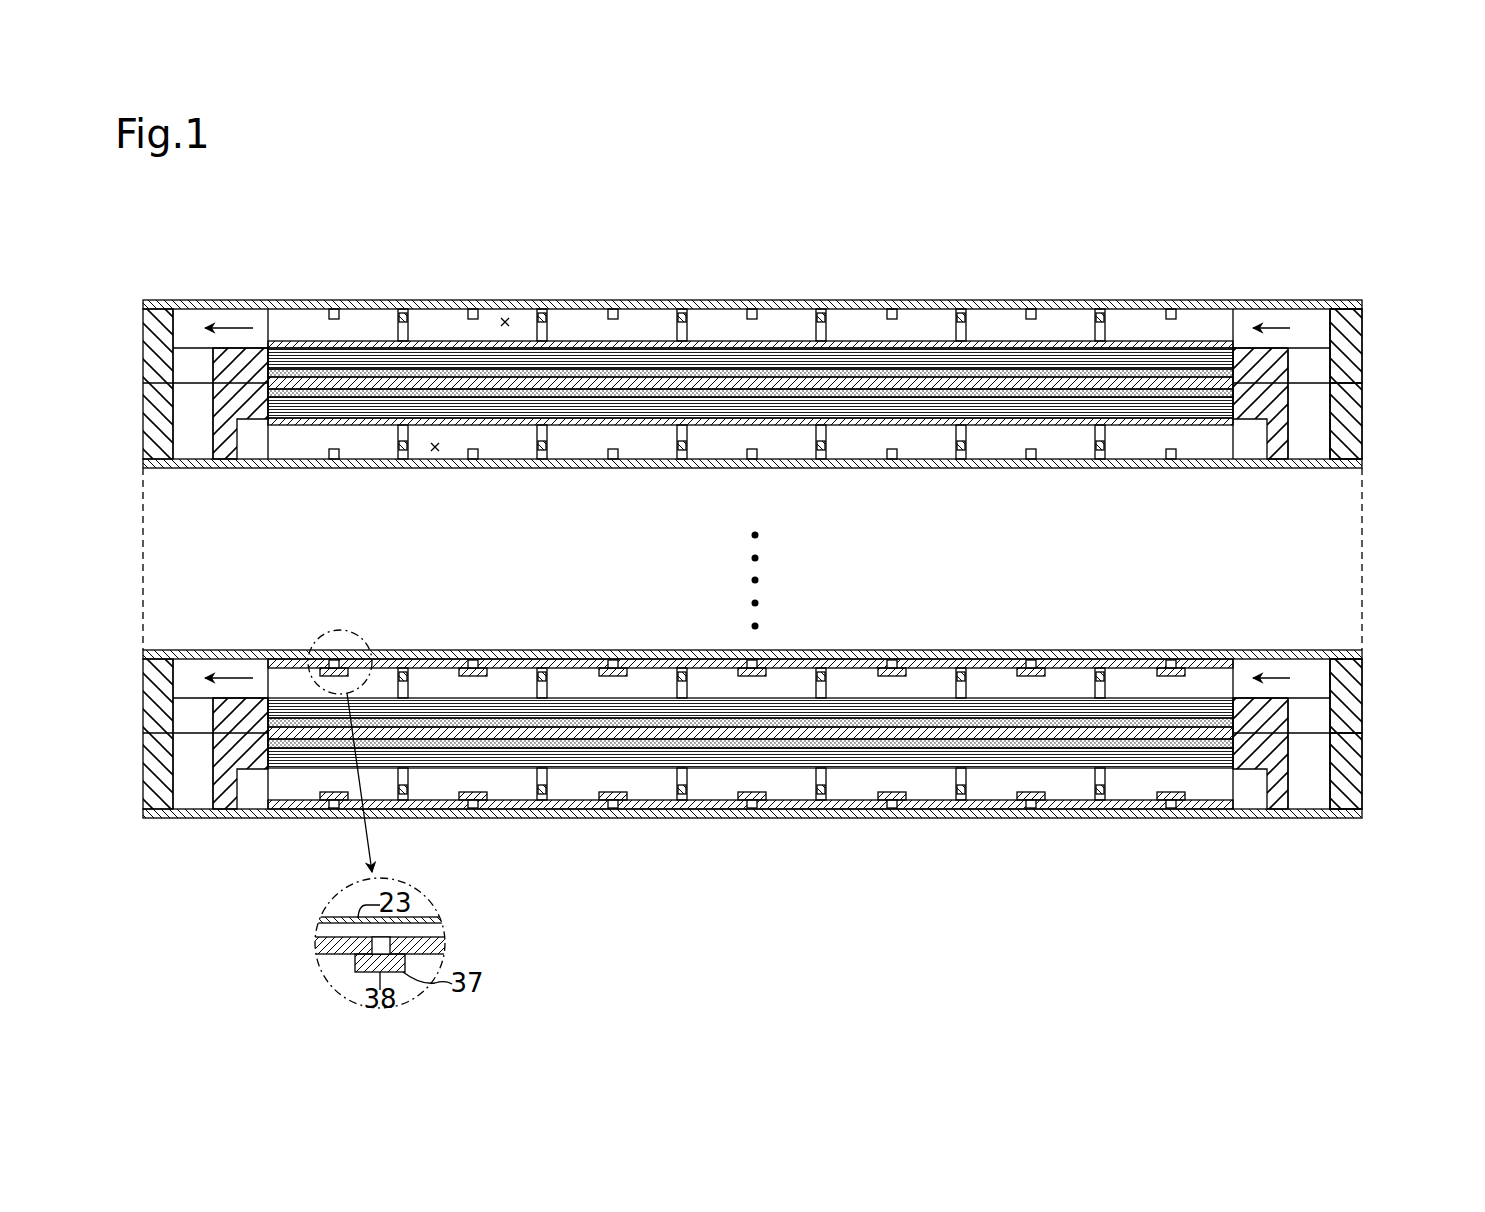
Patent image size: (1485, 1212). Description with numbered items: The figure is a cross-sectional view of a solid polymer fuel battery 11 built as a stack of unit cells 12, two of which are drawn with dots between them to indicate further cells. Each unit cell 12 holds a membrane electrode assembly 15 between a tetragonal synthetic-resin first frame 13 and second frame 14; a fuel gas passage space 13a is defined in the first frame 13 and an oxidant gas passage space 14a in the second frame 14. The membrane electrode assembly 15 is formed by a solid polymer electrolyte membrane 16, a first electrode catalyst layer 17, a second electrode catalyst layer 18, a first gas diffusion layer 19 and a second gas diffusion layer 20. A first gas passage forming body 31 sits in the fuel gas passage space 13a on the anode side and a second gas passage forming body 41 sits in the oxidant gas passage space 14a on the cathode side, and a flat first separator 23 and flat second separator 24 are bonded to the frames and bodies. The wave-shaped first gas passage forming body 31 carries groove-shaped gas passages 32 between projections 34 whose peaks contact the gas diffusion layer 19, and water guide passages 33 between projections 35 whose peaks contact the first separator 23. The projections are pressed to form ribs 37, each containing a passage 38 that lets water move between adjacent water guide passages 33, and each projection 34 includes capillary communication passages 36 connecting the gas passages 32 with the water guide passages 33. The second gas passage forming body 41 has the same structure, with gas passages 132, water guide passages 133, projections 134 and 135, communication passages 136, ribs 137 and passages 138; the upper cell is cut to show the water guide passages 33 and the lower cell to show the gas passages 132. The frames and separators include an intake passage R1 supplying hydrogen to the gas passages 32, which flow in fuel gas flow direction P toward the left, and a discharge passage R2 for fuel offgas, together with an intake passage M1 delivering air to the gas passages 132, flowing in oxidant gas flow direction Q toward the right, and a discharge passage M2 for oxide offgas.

The fuel battery 11 is at (1369, 218).
The unit cell 12 is at (1392, 300).
The first frame 13 is at (1363, 363).
The second frame 14 is at (1363, 428).
The membrane electrode assembly 15 is at (858, 264).
The solid polymer electrolyte membrane 16 is at (975, 383).
The first electrode catalyst layer 17 is at (1010, 393).
The second electrode catalyst layer 18 is at (930, 350).
The first gas diffusion layer 19 is at (1050, 372).
The second gas diffusion layer 20 is at (876, 410).
The first separator 23 is at (806, 341).
The second separator 24 is at (820, 425).
The first gas passage forming body 31 is at (1130, 333).
The gas passage 32 is at (505, 683).
The water guide passage 33 is at (505, 316).
The projection 34 is at (586, 352).
The projection 35 is at (292, 302).
The communication passage 36 is at (398, 320).
The rib 37 is at (409, 318).
The passage 38 is at (333, 310).
The second gas passage forming body 41 is at (1122, 430).
The gas passage 132 is at (500, 786).
The water guide passage 133 is at (437, 453).
The projection 134 is at (585, 416).
The projection 135 is at (598, 812).
The communication passage 136 is at (538, 446).
The rib 137 is at (684, 450).
The passage 138 is at (334, 461).
The fuel gas passage space 13a is at (1228, 668).
The oxidant gas passage space 14a is at (1226, 800).
The intake passage M1 is at (250, 432).
The discharge passage M2 is at (1250, 432).
The intake passage R1 is at (1300, 325).
The discharge passage R2 is at (190, 325).
The fuel gas flow direction P is at (594, 687).
The oxidant gas flow direction Q is at (585, 780).